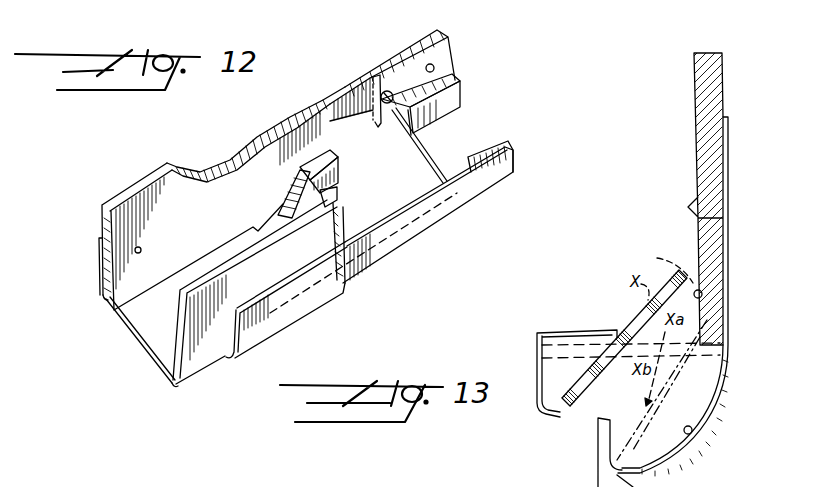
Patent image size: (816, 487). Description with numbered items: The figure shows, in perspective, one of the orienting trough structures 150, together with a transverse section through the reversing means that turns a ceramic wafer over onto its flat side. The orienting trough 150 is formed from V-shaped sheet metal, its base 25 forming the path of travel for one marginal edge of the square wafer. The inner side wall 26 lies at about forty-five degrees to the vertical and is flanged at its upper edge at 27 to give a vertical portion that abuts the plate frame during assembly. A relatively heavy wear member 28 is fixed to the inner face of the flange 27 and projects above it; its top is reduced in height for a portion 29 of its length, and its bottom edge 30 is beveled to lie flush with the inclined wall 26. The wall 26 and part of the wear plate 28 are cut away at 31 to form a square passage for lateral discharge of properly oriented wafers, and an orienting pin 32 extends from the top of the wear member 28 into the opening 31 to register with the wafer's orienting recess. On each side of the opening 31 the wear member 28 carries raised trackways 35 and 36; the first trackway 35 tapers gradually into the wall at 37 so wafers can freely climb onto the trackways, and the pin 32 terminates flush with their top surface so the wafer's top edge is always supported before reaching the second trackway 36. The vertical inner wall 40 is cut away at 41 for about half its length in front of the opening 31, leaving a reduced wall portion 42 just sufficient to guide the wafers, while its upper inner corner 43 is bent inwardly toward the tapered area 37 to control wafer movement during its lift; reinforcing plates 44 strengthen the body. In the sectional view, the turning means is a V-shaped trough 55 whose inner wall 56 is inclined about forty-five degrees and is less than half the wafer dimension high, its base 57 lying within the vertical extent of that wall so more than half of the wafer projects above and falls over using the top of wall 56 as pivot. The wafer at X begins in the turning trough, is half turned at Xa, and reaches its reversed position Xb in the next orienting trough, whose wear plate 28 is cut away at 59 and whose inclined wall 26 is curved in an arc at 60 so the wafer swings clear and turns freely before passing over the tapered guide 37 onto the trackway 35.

In FIG. 12, the base of the trough 25 is at (173, 388).
In FIG. 12, the inner side wall 26 is at (147, 338).
In FIG. 12, the flange 27 is at (100, 253).
In FIG. 12, the wear member 28 is at (167, 207).
In FIG. 13, the wear member 28 is at (693, 100).
In FIG. 12, the reduced height portion 29 is at (308, 115).
In FIG. 12, the bottom edge 30 is at (103, 297).
In FIG. 12, the discharge opening 31 is at (418, 165).
In FIG. 12, the orienting pin 32 is at (386, 125).
In FIG. 12, the first trackway 35 is at (337, 180).
In FIG. 12, the second trackway 36 is at (453, 88).
In FIG. 12, the tapered area 37 is at (287, 203).
In FIG. 12, the inner wall 40 is at (283, 267).
In FIG. 12, the cut-away portion 41 is at (498, 145).
In FIG. 12, the reduced wall portion 42 is at (377, 247).
In FIG. 12, the upper inner corner 43 is at (337, 193).
In FIG. 12, the reinforcing plates 44 is at (297, 303).
In FIG. 12, the orienting trough structure 150 is at (459, 55).
In FIG. 13, the reversing trough 55 is at (537, 347).
In FIG. 13, the inner wall of reversing trough 56 is at (600, 380).
In FIG. 13, the base of reversing trough 57 is at (558, 418).
In FIG. 13, the cut-away of wear plate 59 is at (702, 296).
In FIG. 13, the arcuate wall portion 60 is at (692, 434).